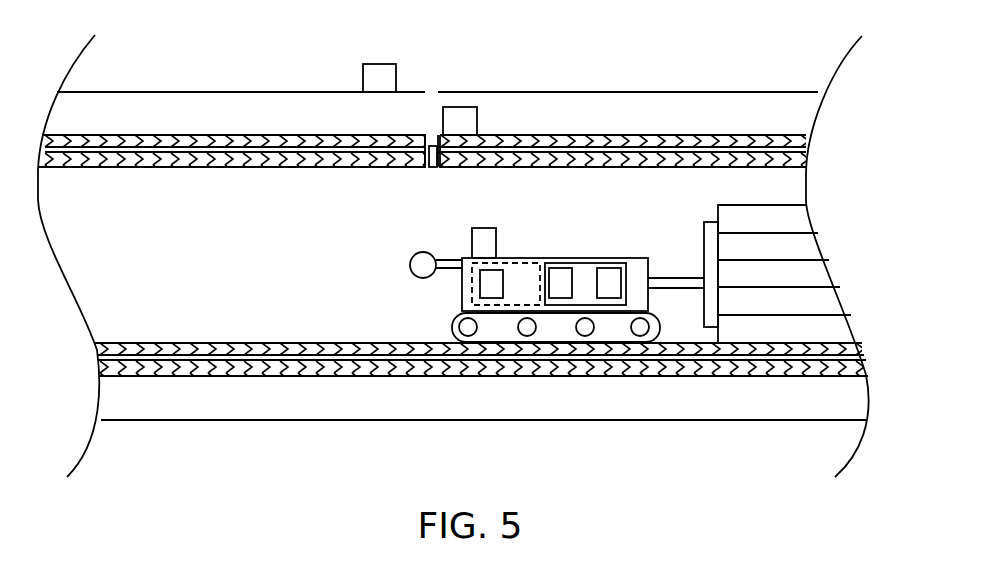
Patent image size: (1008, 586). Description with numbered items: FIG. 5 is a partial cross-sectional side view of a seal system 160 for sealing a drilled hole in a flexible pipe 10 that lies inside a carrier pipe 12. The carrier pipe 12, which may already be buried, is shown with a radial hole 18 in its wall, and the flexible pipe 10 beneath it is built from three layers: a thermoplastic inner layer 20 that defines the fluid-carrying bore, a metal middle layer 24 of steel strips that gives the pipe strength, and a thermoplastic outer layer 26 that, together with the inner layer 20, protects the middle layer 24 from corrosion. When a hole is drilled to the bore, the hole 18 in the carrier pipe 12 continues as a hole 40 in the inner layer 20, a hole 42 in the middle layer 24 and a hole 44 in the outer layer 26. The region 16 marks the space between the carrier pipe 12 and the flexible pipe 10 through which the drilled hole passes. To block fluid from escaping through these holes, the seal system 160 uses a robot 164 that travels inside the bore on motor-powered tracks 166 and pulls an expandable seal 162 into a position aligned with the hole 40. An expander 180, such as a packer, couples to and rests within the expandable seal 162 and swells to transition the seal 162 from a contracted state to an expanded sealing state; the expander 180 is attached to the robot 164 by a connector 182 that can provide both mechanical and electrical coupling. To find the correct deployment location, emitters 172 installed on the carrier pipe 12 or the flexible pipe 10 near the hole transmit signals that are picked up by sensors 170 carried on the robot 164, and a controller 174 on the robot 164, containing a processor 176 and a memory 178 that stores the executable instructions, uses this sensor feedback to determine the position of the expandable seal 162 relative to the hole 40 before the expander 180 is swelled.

The flexible pipe 10 is at (853, 282).
The carrier pipe 12 is at (190, 92).
The pipe interior surface 16 is at (196, 120).
The hole 18 is at (440, 45).
The inner layer 20 is at (688, 168).
The middle layer 24 is at (608, 150).
The outer layer 26 is at (721, 137).
The hole 40 is at (431, 168).
The hole 42 is at (445, 152).
The hole 44 is at (429, 135).
The seal system 160 is at (262, 470).
The expandable seal 162 is at (732, 217).
The robot 164 is at (222, 259).
The tracks 166 is at (495, 342).
The sensors 170 is at (413, 256).
The emitters 172 is at (363, 84).
The controller 174 is at (616, 305).
The processor 176 is at (557, 298).
The memory 178 is at (605, 298).
The expander 180 is at (710, 243).
The connector 182 is at (680, 288).